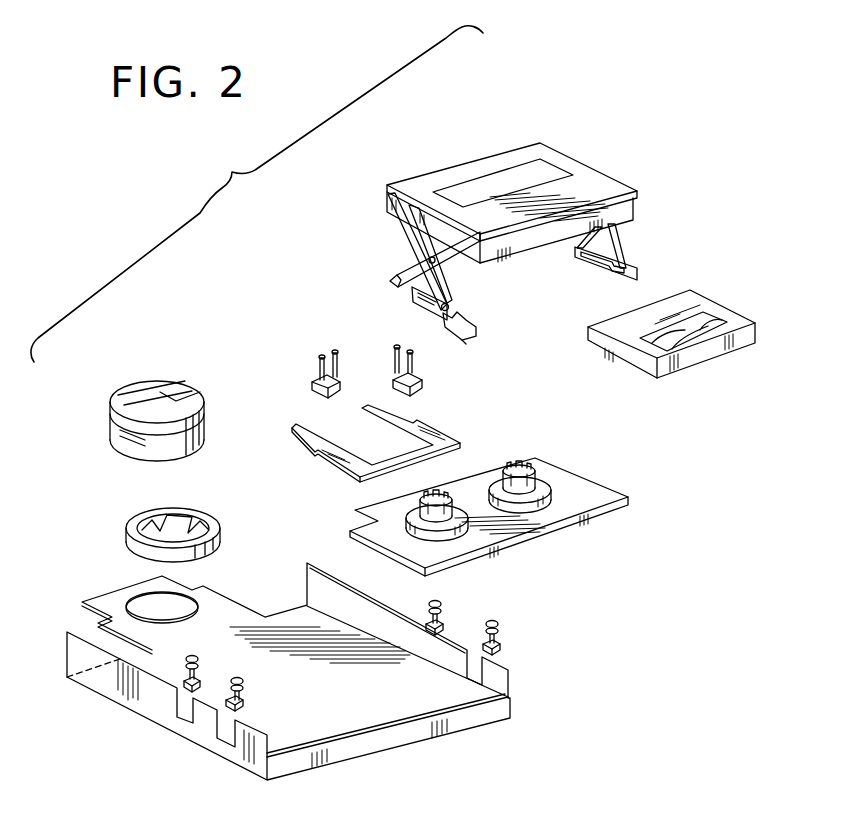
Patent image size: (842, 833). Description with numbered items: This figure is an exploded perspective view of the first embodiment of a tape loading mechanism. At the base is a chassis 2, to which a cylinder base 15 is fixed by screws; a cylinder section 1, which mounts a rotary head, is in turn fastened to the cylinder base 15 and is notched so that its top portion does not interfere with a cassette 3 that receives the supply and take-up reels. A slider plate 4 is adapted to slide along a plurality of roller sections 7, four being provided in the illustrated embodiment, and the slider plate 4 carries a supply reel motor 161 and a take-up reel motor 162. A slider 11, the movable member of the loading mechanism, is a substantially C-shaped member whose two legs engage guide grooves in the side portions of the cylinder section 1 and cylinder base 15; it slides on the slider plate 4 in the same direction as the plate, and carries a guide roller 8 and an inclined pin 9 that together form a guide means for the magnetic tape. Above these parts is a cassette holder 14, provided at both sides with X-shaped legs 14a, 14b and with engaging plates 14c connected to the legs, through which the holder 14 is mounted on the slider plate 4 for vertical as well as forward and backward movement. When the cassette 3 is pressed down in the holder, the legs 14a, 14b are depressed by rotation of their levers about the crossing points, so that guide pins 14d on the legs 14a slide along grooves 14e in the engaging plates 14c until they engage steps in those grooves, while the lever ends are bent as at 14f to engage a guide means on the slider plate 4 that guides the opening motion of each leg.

The cylinder section 1 is at (122, 393).
The chassis 2 is at (118, 598).
The cassette 3 is at (714, 300).
The slider plate 4 is at (584, 494).
The roller sections 7 is at (200, 667).
The guide roller 8 is at (312, 377).
The inclined pin 9 is at (397, 360).
The slider 11 is at (298, 428).
The cassette holder 14 is at (452, 166).
The X-shaped leg 14a is at (438, 283).
The X-shaped leg 14b is at (402, 270).
The engaging plate 14c is at (470, 313).
The guide pin 14d is at (446, 328).
The groove 14e is at (458, 328).
The bent end 14f is at (388, 285).
The cylinder base 15 is at (128, 535).
The supply reel motor 161 is at (447, 496).
The take-up reel motor 162 is at (530, 470).